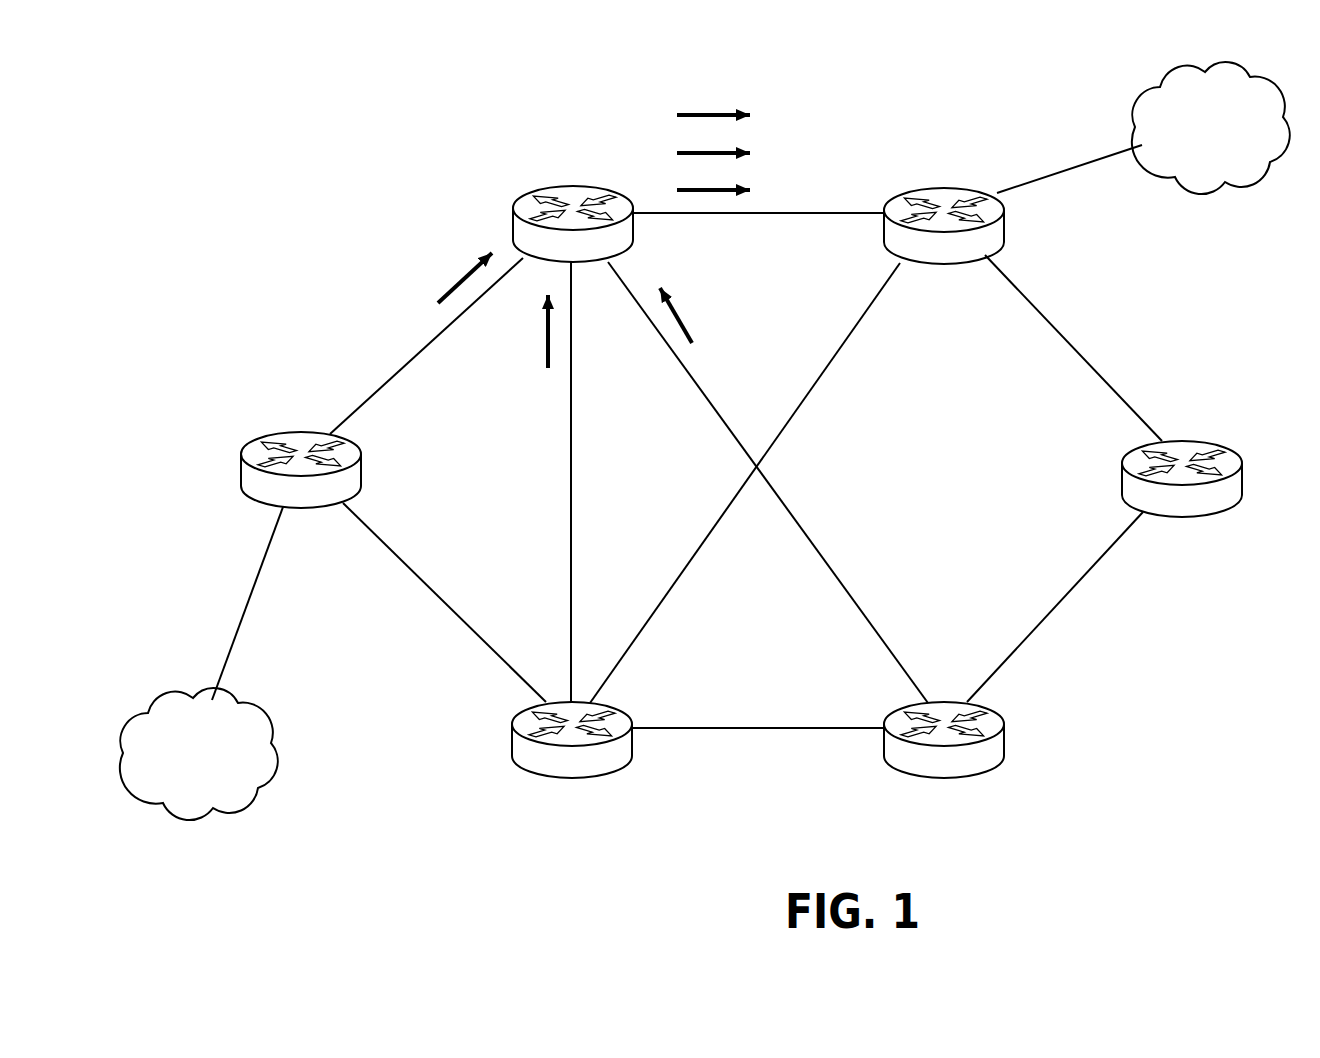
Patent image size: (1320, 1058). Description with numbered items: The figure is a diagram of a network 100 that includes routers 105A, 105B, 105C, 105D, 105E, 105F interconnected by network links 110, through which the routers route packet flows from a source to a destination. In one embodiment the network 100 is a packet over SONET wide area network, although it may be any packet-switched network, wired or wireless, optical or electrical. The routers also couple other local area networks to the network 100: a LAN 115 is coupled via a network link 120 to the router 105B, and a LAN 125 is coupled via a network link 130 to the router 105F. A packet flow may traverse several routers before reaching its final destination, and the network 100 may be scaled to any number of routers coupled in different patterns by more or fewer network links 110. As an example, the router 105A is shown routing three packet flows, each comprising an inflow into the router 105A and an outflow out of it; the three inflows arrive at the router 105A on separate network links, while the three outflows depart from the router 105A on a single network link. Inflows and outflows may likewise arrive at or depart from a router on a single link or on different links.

The network 100 is at (310, 136).
The router 105A is at (530, 190).
The router 105B is at (262, 434).
The router 105C is at (623, 768).
The router 105D is at (988, 770).
The router 105E is at (1218, 442).
The router 105F is at (903, 192).
The network link 110 is at (790, 213).
The LAN 115 is at (228, 808).
The network link 120 is at (257, 577).
The LAN 125 is at (1143, 102).
The network link 130 is at (1073, 168).